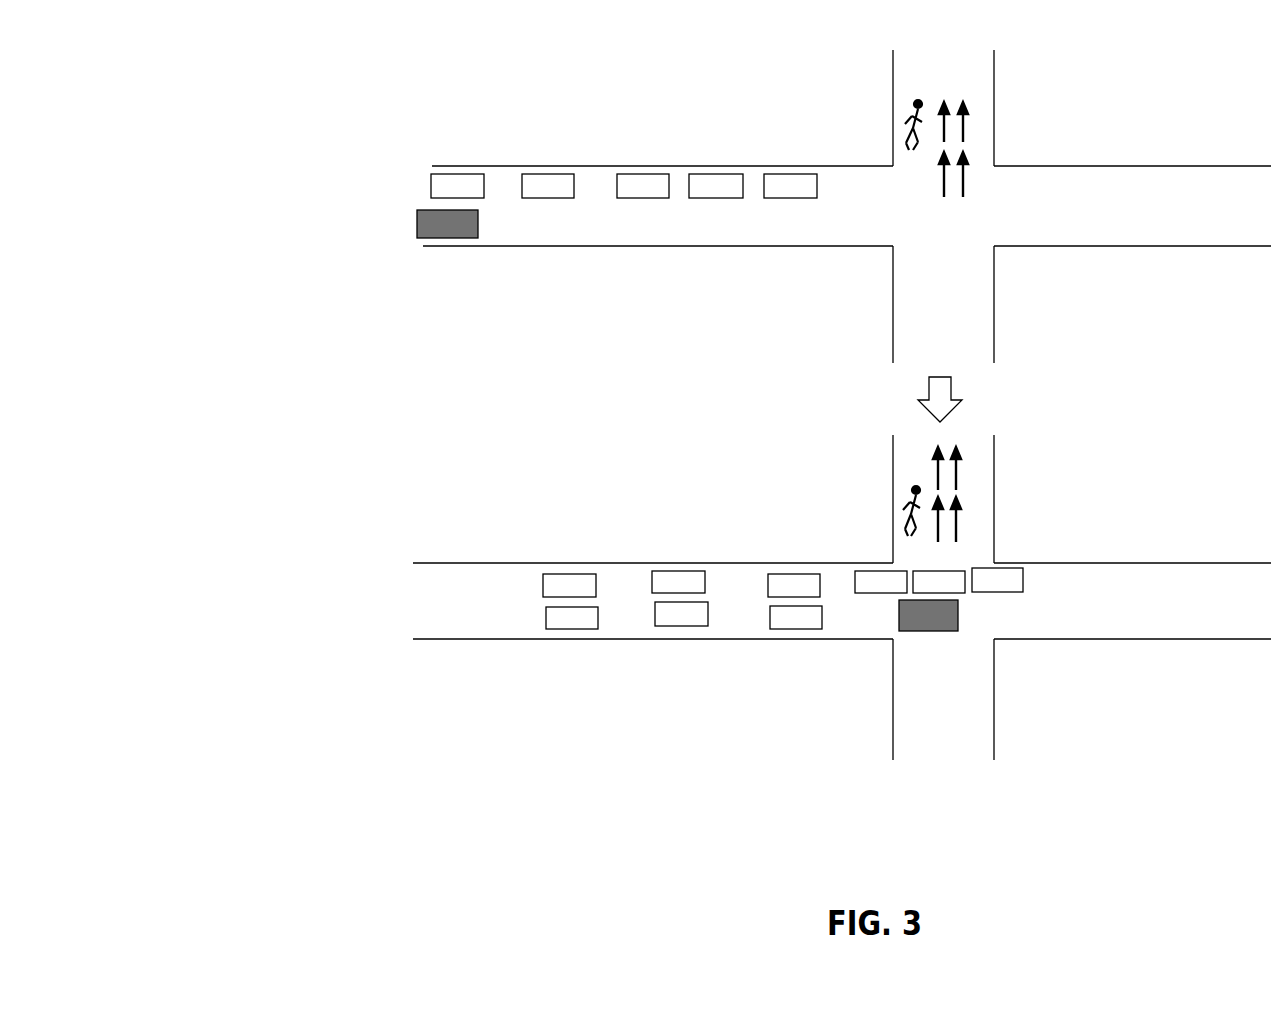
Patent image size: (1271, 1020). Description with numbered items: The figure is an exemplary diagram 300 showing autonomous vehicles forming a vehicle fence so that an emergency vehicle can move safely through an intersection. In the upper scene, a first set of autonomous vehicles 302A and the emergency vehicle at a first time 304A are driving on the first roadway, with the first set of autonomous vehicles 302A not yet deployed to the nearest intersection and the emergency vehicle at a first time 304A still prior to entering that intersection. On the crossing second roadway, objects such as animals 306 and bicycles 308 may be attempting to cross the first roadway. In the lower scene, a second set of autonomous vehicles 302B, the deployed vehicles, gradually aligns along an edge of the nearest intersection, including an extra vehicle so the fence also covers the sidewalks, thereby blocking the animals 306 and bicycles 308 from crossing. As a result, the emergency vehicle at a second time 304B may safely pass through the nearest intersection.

The exemplary diagram 300 is at (330, 52).
The first set of autonomous vehicles 302A is at (768, 173).
The second set of autonomous vehicles 302B is at (897, 585).
The emergency vehicle at a first time 304A is at (468, 238).
The emergency vehicle at a second time 304B is at (909, 633).
The animals 306 is at (903, 143).
The bicycles 308 is at (967, 150).